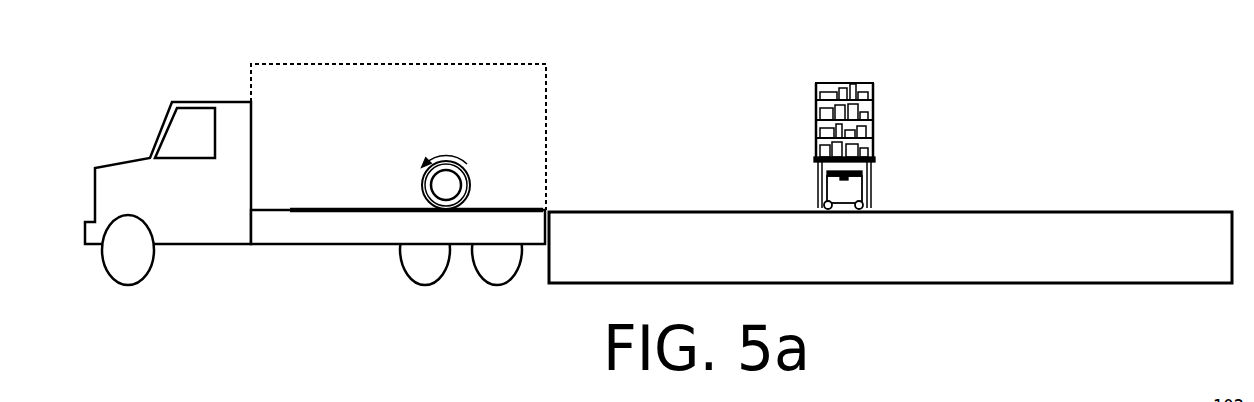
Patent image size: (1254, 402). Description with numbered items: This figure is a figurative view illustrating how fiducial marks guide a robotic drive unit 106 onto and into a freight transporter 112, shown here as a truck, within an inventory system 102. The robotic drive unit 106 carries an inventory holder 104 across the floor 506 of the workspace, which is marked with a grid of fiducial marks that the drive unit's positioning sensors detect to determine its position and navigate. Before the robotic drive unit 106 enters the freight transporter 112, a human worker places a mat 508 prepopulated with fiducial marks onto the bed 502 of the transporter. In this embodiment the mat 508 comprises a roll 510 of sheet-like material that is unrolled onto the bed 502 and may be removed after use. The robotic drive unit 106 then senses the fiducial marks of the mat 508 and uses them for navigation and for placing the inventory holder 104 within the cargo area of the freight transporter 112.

The freight transporter 112 is at (235, 112).
The bed 502 is at (308, 210).
The mat 508 is at (515, 208).
The roll 510 is at (422, 180).
The inventory holder 104 is at (816, 102).
The robotic drive unit 106 is at (835, 182).
The floor 506 is at (984, 211).
The inventory system 102 is at (1144, 115).